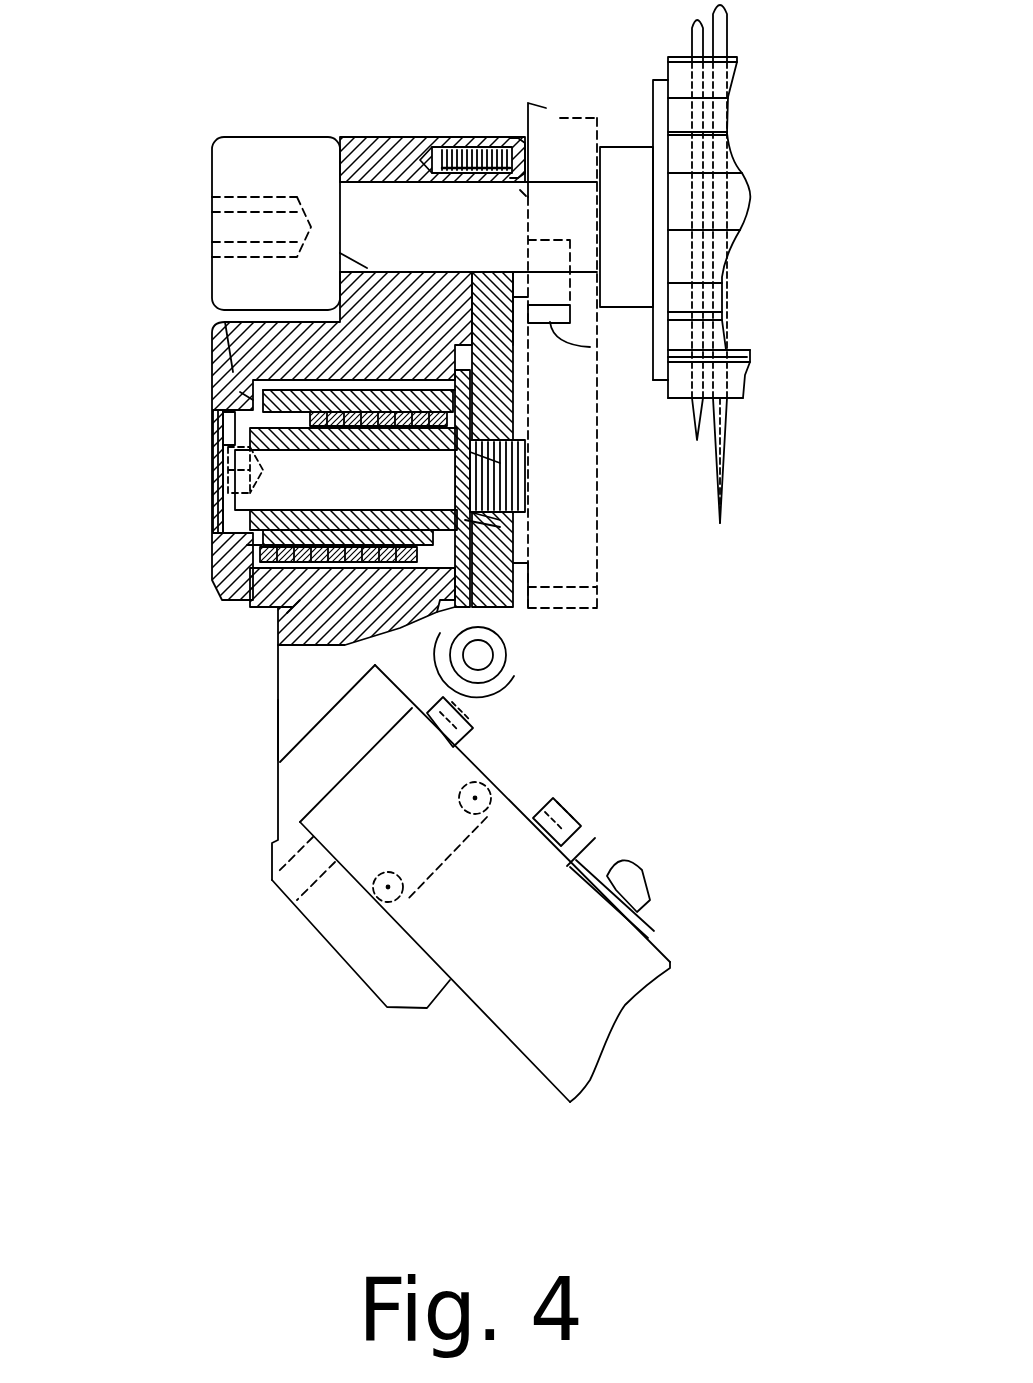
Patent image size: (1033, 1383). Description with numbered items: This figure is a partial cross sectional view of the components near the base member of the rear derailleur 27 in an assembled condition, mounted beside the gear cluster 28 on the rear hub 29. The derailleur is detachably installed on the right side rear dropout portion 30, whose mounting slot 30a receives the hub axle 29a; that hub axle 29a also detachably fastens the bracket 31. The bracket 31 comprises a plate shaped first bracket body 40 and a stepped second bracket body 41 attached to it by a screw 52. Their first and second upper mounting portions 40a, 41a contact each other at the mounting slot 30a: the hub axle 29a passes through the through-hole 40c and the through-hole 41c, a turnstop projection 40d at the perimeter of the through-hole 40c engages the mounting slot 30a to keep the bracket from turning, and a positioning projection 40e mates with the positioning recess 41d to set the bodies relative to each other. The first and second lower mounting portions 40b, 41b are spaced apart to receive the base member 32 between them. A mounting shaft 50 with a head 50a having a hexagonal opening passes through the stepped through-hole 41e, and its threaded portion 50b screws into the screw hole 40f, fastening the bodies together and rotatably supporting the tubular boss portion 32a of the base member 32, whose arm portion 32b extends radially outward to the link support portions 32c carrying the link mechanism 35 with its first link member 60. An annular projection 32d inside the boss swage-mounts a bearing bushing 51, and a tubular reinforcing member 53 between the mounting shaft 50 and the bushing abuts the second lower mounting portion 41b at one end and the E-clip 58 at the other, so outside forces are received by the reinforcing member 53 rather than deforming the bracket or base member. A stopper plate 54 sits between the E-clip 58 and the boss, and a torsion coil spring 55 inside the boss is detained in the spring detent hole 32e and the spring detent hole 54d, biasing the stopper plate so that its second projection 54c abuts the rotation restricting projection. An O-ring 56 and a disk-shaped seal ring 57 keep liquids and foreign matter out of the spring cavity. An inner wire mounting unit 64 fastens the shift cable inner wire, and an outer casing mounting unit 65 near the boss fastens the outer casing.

The rear derailleur 27 is at (641, 695).
The gear cluster 28 is at (737, 452).
The rear hub 29 is at (682, 405).
The hub axle 29a is at (365, 205).
The rear dropout portion 30 is at (604, 565).
The mounting slot 30a is at (560, 417).
The bracket 31 is at (408, 135).
The base member 32 is at (277, 650).
The tubular boss portion 32a is at (233, 372).
The arm portion 32b is at (287, 733).
The link support portions 32c is at (523, 773).
The annular projection 32d is at (292, 621).
The spring detent hole 32e is at (287, 613).
The link mechanism 35 is at (500, 850).
The first bracket body 40 is at (482, 135).
The first upper mounting portion 40a is at (498, 135).
The first lower mounting portion 40b is at (470, 410).
The through-hole 40c is at (521, 195).
The turnstop projection 40d is at (555, 345).
The positioning projection 40e is at (525, 366).
The screw hole 40f is at (500, 520).
The second bracket body 41 is at (375, 134).
The second upper mounting portion 41a is at (362, 135).
The second lower mounting portion 41b is at (240, 392).
The through-hole 41c is at (340, 253).
The positioning recess 41d is at (450, 356).
The stepped through-hole 41e is at (224, 462).
The mounting shaft 50 is at (283, 473).
The head 50a is at (232, 470).
The threaded portion 50b is at (500, 463).
The bearing bushing 51 is at (215, 428).
The screw 52 is at (448, 147).
The reinforcing member 53 is at (243, 540).
The stopper plate 54 is at (458, 590).
The second projection 54c is at (457, 488).
The spring detent hole 54d is at (515, 432).
The torsion coil spring 55 is at (330, 698).
The O-ring 56 is at (252, 553).
The seal ring 57 is at (467, 610).
The E-clip 58 is at (500, 527).
The first link member 60 is at (533, 1027).
The inner wire mounting unit 64 is at (622, 866).
The outer casing mounting unit 65 is at (503, 733).